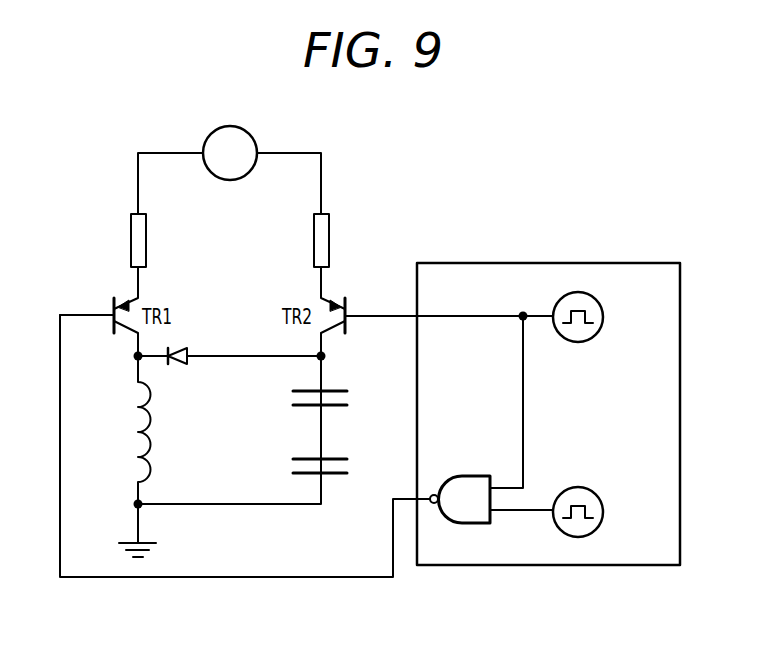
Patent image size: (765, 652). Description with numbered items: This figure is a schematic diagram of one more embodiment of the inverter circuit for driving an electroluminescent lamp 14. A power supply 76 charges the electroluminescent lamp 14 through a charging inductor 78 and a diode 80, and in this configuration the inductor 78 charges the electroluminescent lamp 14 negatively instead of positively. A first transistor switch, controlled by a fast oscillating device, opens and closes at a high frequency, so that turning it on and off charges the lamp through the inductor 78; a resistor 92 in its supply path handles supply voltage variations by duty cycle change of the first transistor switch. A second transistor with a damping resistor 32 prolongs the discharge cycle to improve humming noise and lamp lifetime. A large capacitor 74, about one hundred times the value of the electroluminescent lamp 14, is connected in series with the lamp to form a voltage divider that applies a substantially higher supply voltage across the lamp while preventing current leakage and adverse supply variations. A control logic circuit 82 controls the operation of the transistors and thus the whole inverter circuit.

The power supply 76 is at (229, 125).
The resistor 92 is at (131, 238).
The damping resistor 32 is at (329, 240).
The diode 80 is at (186, 365).
The charging inductor 78 is at (137, 431).
The capacitor 74 is at (291, 397).
The electroluminescent lamp 14 is at (291, 465).
The control logic circuit 82 is at (553, 262).